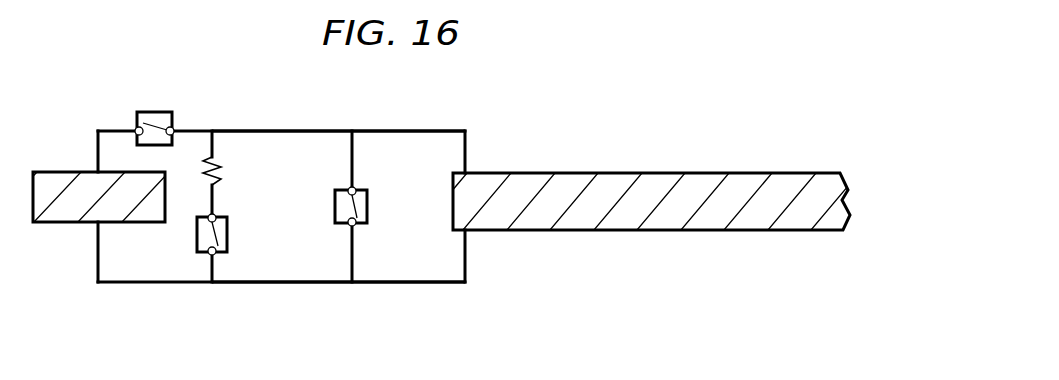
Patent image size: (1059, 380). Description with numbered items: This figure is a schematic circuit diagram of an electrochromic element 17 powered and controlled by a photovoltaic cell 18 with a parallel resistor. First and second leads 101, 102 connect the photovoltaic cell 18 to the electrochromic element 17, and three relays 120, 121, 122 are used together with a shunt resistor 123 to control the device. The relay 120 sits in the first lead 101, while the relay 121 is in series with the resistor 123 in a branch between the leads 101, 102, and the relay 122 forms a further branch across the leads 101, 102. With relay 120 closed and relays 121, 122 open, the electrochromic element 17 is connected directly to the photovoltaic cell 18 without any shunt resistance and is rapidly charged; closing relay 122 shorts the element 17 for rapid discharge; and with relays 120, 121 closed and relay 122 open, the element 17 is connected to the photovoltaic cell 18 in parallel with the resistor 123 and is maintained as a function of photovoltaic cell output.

The electrochromic element 17 is at (502, 173).
The photovoltaic cell 18 is at (62, 172).
The first lead 101 is at (372, 130).
The second lead 102 is at (332, 285).
The relay 120 is at (155, 112).
The relay 121 is at (227, 235).
The relay 122 is at (367, 205).
The shunt resistor 123 is at (223, 175).